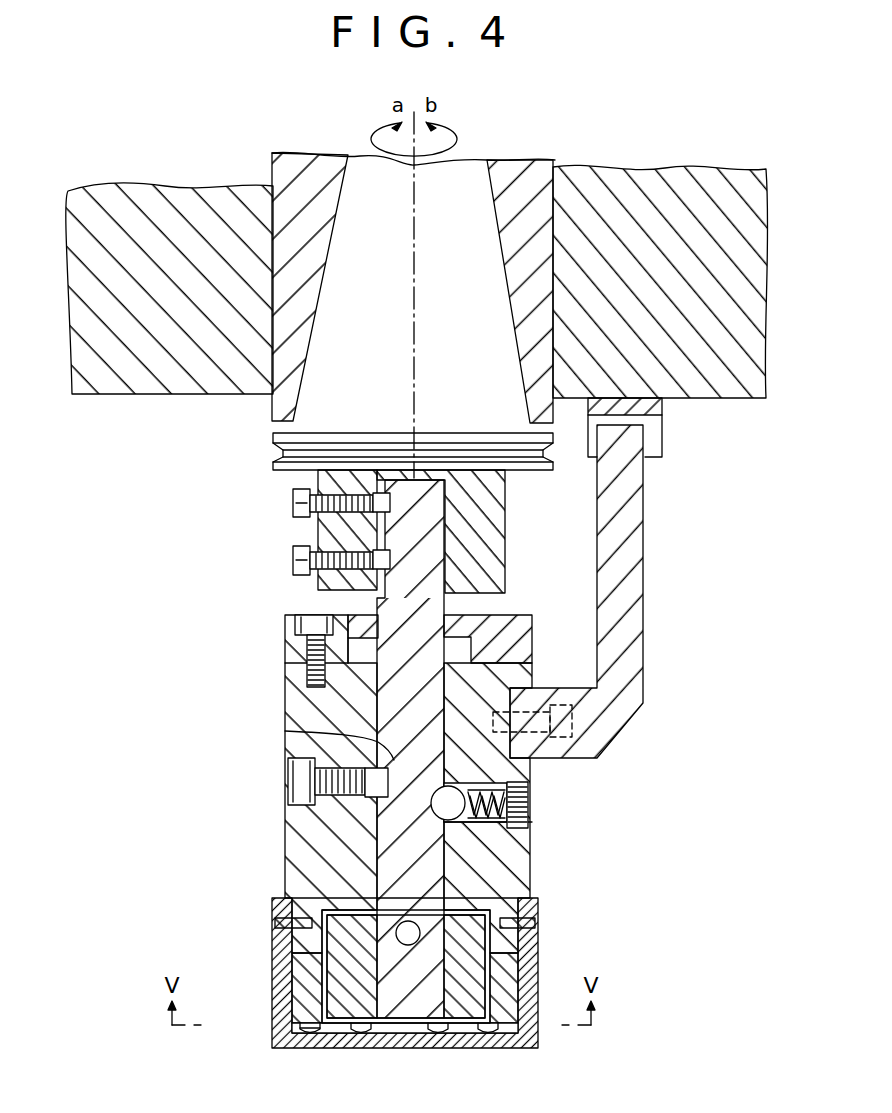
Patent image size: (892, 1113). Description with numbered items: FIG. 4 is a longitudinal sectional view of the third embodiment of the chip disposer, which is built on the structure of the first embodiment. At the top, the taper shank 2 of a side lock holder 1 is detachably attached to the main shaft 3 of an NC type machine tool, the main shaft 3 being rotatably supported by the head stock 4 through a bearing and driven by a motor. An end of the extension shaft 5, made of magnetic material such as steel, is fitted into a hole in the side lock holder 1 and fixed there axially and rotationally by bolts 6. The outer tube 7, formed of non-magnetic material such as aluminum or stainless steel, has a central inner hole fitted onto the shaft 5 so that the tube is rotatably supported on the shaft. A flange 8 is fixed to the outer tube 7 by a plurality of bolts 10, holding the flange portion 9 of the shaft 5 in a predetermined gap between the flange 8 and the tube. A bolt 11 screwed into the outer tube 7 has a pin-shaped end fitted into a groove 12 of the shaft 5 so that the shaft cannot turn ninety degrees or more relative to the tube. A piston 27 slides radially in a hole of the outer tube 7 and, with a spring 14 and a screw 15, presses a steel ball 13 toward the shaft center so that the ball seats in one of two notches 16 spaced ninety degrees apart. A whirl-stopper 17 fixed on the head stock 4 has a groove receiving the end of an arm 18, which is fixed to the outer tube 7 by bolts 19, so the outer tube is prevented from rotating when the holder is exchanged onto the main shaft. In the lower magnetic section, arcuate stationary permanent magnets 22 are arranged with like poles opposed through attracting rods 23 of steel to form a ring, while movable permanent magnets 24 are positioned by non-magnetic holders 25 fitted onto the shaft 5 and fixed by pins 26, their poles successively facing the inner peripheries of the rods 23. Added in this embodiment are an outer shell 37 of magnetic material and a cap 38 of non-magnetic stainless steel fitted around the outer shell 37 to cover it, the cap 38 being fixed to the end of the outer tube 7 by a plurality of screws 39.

The side lock holder 1 is at (280, 458).
The taper shank 2 is at (350, 200).
The main shaft 3 is at (523, 210).
The head stock 4 is at (702, 215).
The extension shaft 5 is at (423, 500).
The bolts 6 is at (295, 503).
The outer tube 7 is at (307, 868).
The flange 8 is at (300, 660).
The flange portion 9 is at (490, 640).
The bolts 10 is at (300, 626).
The bolt 11 is at (290, 785).
The groove 12 is at (285, 731).
The steel ball 13 is at (478, 835).
The spring 14 is at (497, 815).
The screw 15 is at (522, 790).
The notches 16 is at (440, 815).
The whirl-stopper 17 is at (650, 405).
The arm 18 is at (617, 515).
The bolts 19 is at (572, 722).
The stationary permanent magnets 22 is at (311, 1060).
The attracting rods 23 is at (303, 1007).
The movable permanent magnets 24 is at (352, 1005).
The holders 25 is at (465, 947).
The pins 26 is at (408, 946).
The piston 27 is at (455, 824).
The outer shell 37 is at (290, 1026).
The cap 38 is at (272, 985).
The screws 39 is at (283, 923).